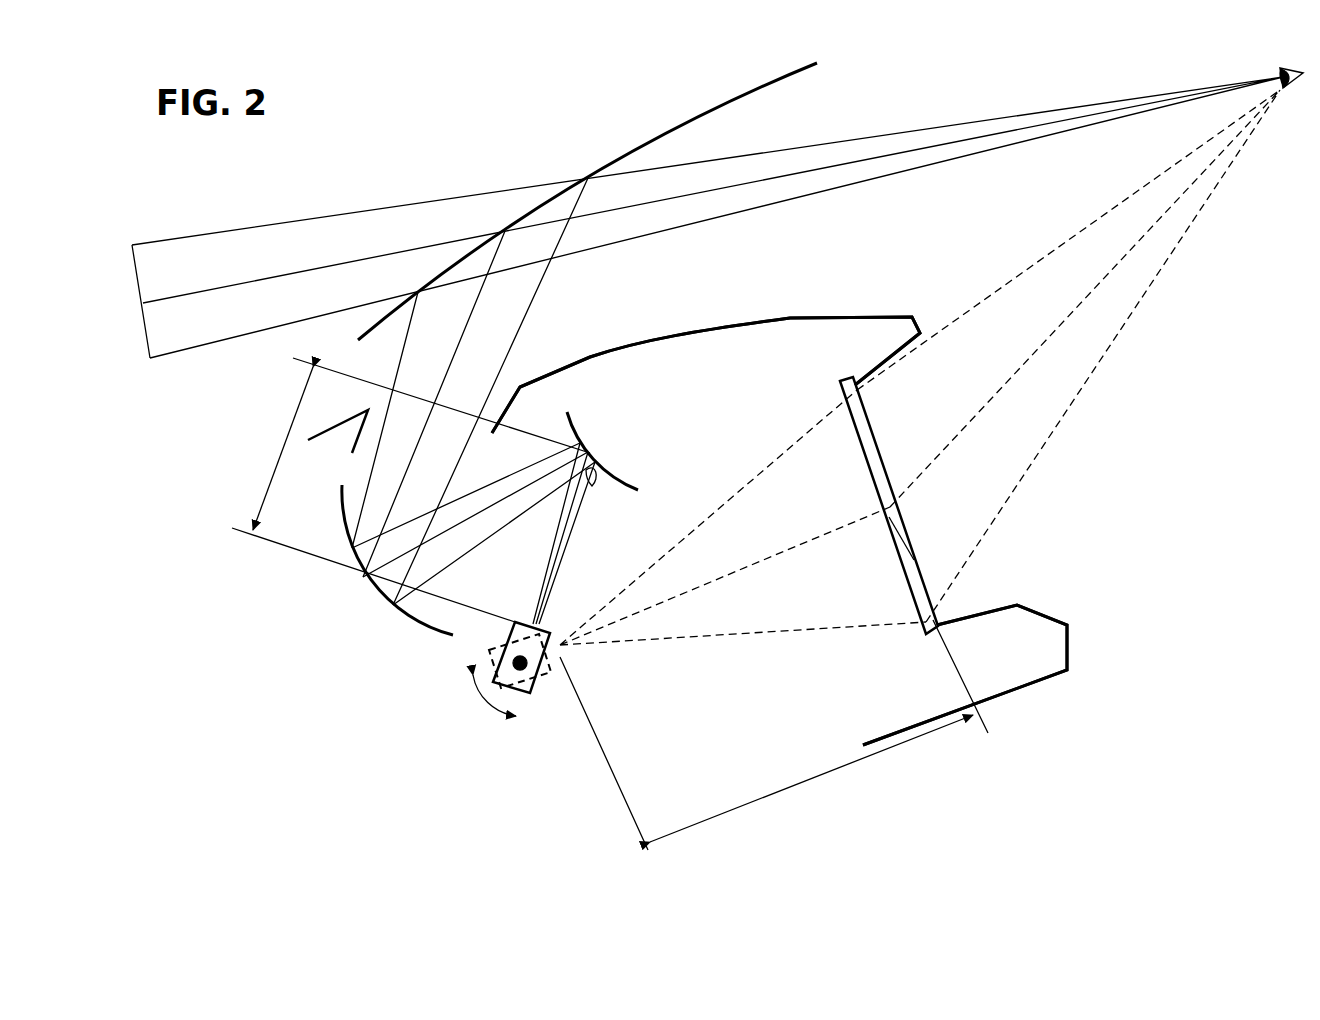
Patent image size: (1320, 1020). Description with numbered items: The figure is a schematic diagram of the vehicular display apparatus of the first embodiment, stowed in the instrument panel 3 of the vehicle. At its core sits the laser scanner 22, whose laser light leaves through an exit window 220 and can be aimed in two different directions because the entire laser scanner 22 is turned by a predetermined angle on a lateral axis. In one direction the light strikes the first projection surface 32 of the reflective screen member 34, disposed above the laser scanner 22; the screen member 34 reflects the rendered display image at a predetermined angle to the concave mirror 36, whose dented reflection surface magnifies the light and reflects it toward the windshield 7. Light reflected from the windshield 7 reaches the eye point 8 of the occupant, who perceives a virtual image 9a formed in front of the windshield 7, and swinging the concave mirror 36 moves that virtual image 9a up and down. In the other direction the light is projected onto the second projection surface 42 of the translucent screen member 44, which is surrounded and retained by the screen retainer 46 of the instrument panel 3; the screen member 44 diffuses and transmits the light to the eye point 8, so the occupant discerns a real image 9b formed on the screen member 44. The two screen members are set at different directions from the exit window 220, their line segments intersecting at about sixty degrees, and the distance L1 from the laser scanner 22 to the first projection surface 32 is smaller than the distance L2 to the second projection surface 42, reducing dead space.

The instrument panel 3 is at (797, 313).
The screen retainer 46 is at (779, 531).
The windshield 7 is at (710, 108).
The eye point 8 is at (1288, 93).
The virtual image 9a is at (137, 260).
The real image 9b is at (898, 516).
The laser scanner 22 is at (545, 672).
The exit window 220 is at (565, 645).
The first projection surface 32 is at (592, 488).
The screen member 34 is at (578, 422).
The concave mirror 36 is at (402, 620).
The second projection surface 42 is at (897, 552).
The screen member 44 is at (913, 590).
The distance between laser scanner and first projection surface L1 is at (411, 490).
The distance between laser scanner and second projection surface L2 is at (774, 735).